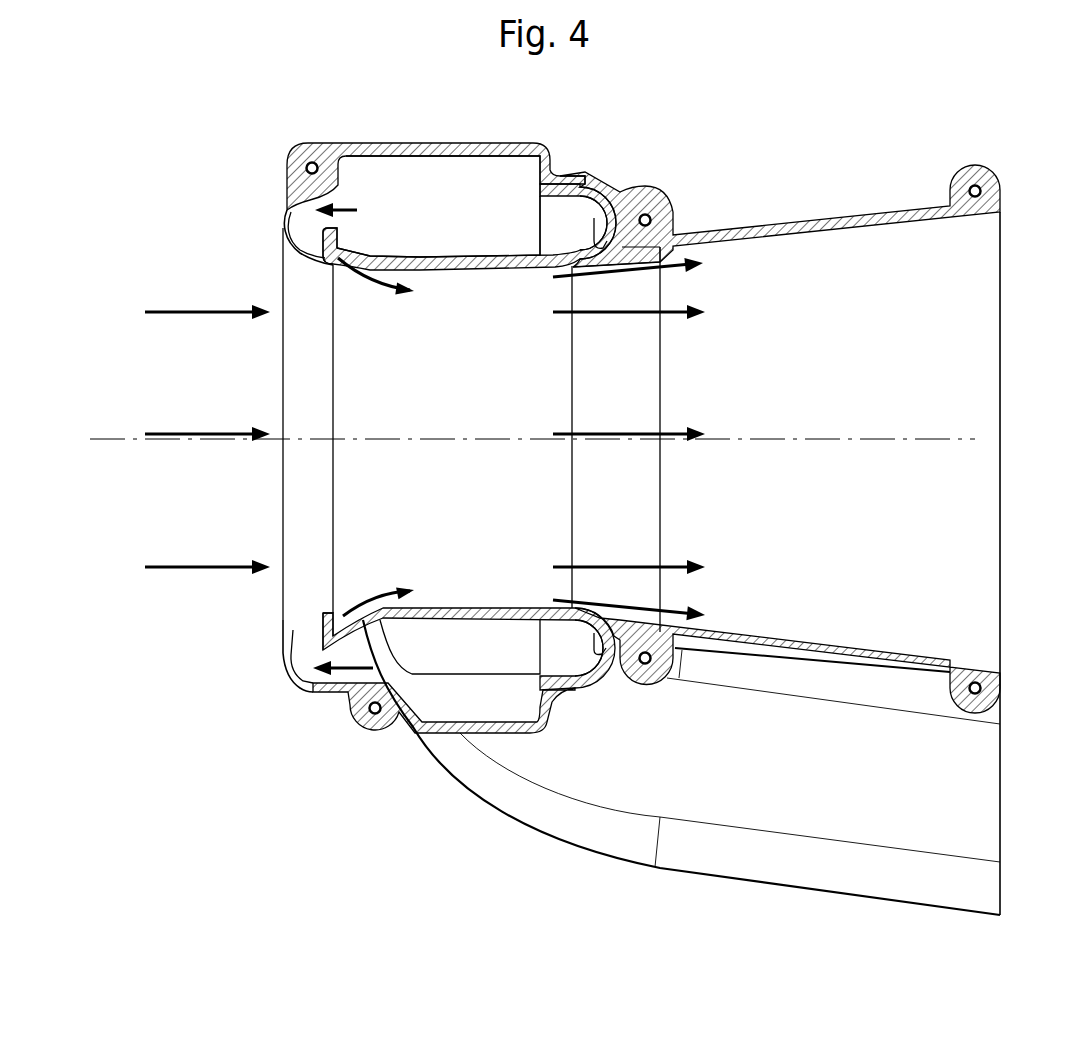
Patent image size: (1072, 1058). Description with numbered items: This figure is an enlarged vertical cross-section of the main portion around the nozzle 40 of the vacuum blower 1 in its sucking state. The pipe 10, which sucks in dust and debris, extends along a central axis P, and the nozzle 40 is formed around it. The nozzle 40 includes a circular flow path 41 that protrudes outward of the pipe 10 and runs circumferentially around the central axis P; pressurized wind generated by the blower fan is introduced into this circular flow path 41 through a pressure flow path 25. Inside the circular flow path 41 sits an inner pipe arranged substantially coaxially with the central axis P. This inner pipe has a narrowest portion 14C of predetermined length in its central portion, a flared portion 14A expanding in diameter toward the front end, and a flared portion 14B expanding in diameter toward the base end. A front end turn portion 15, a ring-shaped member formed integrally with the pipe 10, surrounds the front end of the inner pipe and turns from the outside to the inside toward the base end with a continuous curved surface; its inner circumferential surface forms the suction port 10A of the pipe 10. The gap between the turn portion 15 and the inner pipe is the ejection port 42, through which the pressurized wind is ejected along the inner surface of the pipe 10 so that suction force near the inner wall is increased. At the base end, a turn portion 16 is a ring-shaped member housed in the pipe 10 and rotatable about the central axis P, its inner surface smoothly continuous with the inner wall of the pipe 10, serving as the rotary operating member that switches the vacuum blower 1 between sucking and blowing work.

The vacuum blower 1 is at (724, 127).
The pipe 10 is at (805, 222).
The suction port 10A is at (312, 267).
The flared portion 14A is at (346, 243).
The flared portion 14B is at (592, 226).
The narrowest portion 14C is at (457, 272).
The front end turn portion 15 is at (287, 216).
The base end turn portion 16 is at (588, 264).
The pressure flow path 25 is at (693, 777).
The nozzle 40 is at (412, 140).
The circular flow path 41 is at (462, 158).
The ejection port 42 is at (333, 264).
The central axis P is at (97, 439).